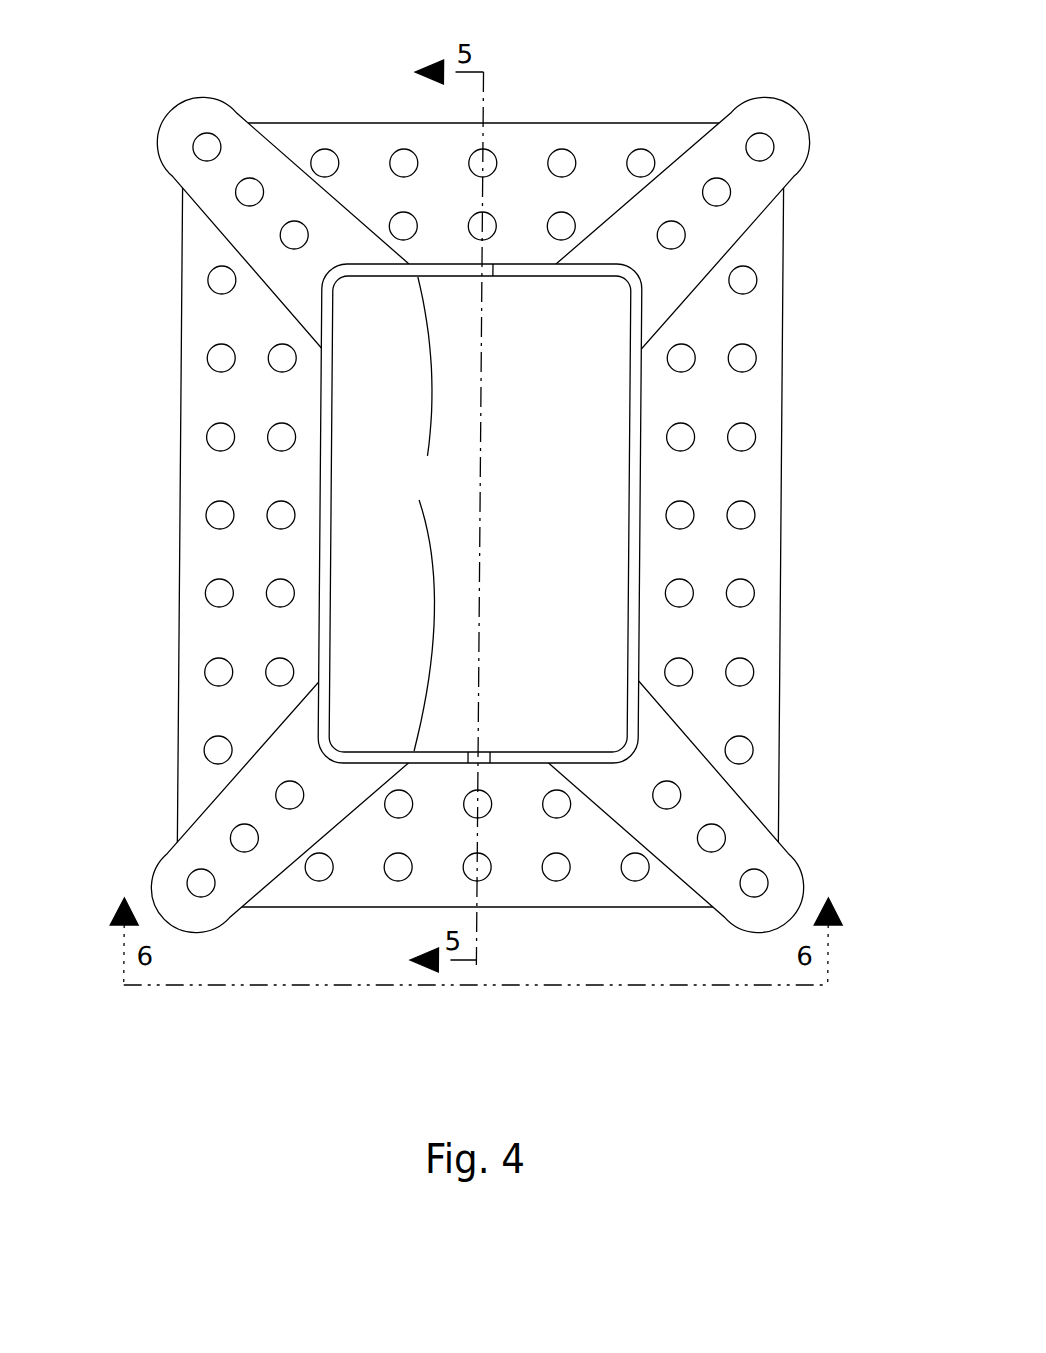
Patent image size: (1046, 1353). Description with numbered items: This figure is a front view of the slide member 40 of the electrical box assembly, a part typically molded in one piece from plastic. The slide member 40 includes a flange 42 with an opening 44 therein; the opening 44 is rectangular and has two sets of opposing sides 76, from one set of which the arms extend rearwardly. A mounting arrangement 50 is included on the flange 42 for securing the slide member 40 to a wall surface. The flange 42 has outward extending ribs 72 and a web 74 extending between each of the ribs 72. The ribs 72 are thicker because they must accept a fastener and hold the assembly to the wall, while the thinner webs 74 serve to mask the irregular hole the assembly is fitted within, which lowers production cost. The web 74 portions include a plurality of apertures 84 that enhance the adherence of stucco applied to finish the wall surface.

The slide member 40 is at (444, 472).
The flange 42 is at (179, 383).
The opening 44 is at (553, 594).
The mounting arrangement 50 is at (725, 196).
The ribs 72 is at (167, 853).
The web 74 is at (726, 569).
The opposing sides 76 is at (428, 514).
The apertures 84 is at (225, 513).